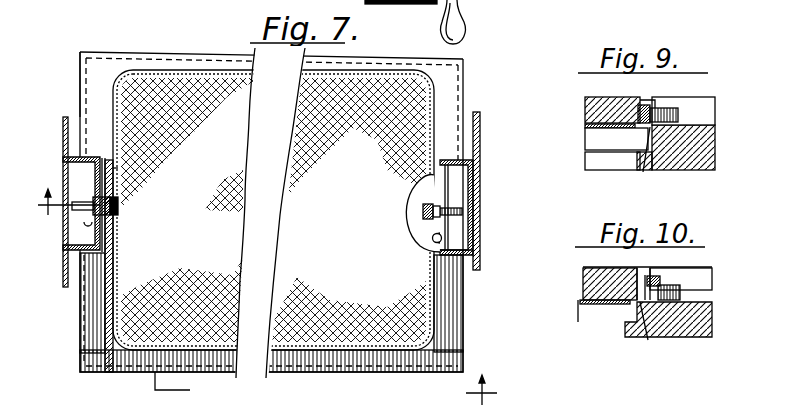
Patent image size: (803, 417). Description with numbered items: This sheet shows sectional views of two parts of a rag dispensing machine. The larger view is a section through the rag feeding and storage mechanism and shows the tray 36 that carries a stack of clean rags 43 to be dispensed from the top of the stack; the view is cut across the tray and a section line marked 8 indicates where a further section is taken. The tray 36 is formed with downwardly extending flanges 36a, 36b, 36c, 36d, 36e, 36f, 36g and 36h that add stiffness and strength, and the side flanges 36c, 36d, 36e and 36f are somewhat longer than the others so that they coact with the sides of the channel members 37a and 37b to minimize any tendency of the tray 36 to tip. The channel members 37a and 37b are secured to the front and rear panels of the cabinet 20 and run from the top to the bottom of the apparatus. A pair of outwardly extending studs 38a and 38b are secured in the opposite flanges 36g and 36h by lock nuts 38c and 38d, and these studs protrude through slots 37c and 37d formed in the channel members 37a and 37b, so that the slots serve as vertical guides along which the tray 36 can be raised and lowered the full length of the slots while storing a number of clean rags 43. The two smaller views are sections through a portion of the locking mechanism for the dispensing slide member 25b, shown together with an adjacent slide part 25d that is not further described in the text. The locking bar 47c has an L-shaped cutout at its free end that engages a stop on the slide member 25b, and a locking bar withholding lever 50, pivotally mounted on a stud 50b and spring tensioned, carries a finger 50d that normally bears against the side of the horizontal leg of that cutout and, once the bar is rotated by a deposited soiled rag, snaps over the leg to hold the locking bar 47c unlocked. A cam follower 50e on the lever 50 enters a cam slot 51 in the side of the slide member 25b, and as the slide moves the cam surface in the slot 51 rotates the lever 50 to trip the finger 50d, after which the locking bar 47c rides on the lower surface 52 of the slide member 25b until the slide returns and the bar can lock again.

In FIG. 7, the section line 8- 8 is at (267, 288).
In FIG. 7, the cabinet 20 is at (62, 230).
In FIG. 7, the tray 36 is at (447, 83).
In FIG. 7, the downwardly extending flange 36a is at (372, 60).
In FIG. 7, the downwardly extending flange 36b is at (445, 394).
In FIG. 7, the side flange 36c is at (452, 323).
In FIG. 7, the side flange 36d is at (463, 100).
In FIG. 7, the side flange 36e is at (77, 313).
In FIG. 7, the side flange 36f is at (85, 103).
In FIG. 7, the flange 36g is at (97, 244).
In FIG. 7, the flange 36h is at (479, 252).
In FIG. 7, the channel member 37a is at (63, 166).
In FIG. 7, the channel member 37b is at (478, 172).
In FIG. 7, the slot 37c is at (58, 206).
In FIG. 7, the slot 37d is at (480, 183).
In FIG. 7, the outwardly extending stud 38a is at (153, 247).
In FIG. 7, the outwardly extending stud 38b is at (440, 211).
In FIG. 7, the lock nut 38c is at (123, 177).
In FIG. 7, the lock nut 38d is at (450, 216).
In FIG. 7, the clean rag 43 is at (212, 158).
In FIG. 9, the dispensing slide member 25b is at (587, 100).
In FIG. 10, the dispensing slide member 25b is at (592, 295).
In FIG. 9, the wall block 25d is at (716, 145).
In FIG. 10, the wall block 25d is at (713, 321).
In FIG. 9, the locking bar 47c is at (616, 149).
In FIG. 9, the locking bar withholding lever 50 is at (680, 115).
In FIG. 10, the locking bar withholding lever 50 is at (712, 290).
In FIG. 10, the stud 50b is at (672, 284).
In FIG. 9, the finger 50d is at (645, 162).
In FIG. 9, the cam follower 50e is at (655, 107).
In FIG. 10, the cam follower 50e is at (658, 277).
In FIG. 10, the cam slot 51 is at (625, 267).
In FIG. 10, the lower surface 52 is at (656, 330).